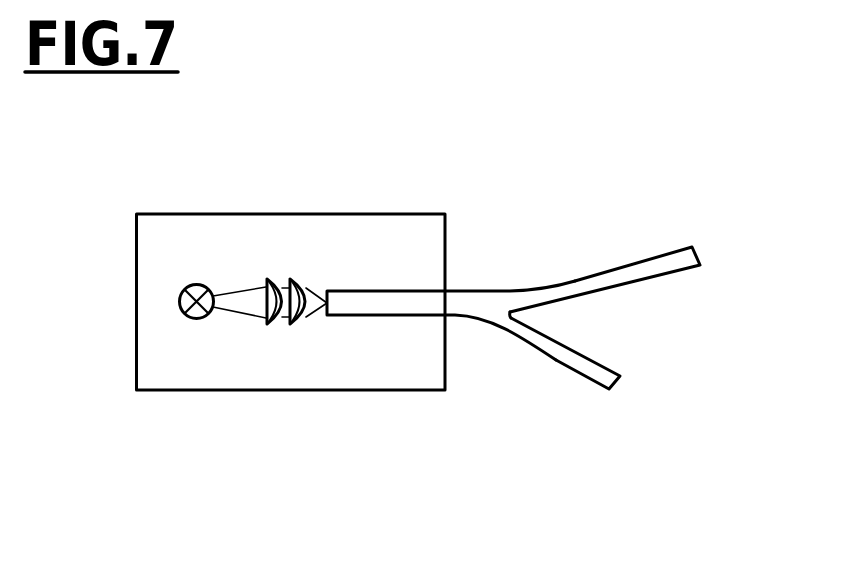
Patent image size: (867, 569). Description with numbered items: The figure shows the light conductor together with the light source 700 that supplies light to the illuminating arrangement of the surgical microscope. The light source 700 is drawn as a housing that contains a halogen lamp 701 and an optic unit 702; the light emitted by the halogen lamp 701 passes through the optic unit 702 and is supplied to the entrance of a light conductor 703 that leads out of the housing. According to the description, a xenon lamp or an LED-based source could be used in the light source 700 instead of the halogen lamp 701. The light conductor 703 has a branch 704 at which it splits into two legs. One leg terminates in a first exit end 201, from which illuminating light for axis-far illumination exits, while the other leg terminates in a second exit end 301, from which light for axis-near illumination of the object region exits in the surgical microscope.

The light source 700 is at (419, 184).
The halogen lamp 701 is at (197, 284).
The optic unit 702 is at (305, 333).
The light conductor 703 is at (473, 302).
The branch 704 is at (546, 320).
The first exit end 201 is at (698, 251).
The second exit end 301 is at (620, 382).